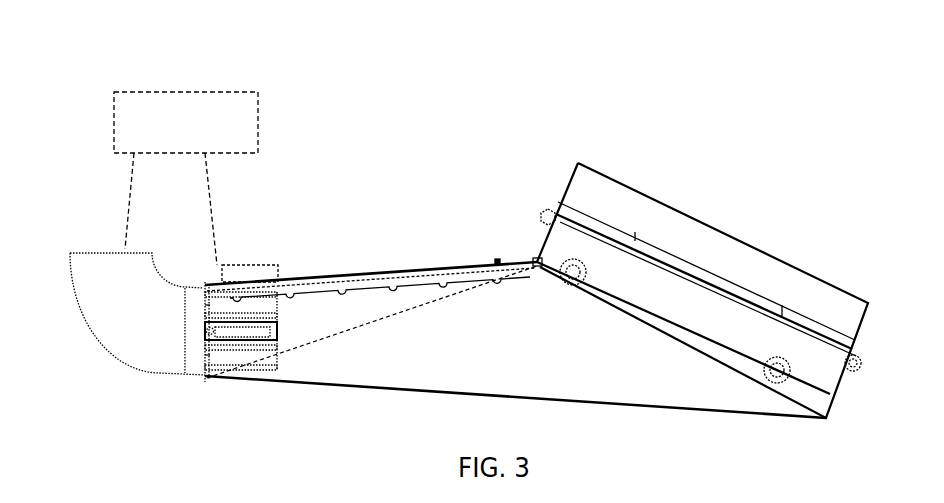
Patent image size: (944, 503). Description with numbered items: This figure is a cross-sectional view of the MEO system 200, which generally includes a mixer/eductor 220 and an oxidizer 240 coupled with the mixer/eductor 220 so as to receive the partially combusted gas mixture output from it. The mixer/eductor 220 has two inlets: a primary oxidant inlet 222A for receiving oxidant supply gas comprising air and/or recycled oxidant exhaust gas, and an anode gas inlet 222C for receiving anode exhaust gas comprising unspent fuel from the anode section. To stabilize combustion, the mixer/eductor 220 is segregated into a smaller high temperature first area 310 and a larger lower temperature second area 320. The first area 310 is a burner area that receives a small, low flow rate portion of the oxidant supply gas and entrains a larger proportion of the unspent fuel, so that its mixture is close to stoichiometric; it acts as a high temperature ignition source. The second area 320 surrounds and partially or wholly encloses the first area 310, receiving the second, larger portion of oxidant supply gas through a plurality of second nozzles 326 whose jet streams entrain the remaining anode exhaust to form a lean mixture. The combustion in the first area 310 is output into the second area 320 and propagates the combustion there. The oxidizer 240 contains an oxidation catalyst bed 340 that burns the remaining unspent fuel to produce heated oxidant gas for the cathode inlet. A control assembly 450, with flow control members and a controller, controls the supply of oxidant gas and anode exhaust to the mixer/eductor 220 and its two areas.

The control assembly 450 is at (232, 90).
The primary oxidant inlet 222A is at (118, 248).
The anode gas inlet 222C is at (265, 263).
The mixer/eductor 220 is at (432, 251).
The first area 310 is at (226, 317).
The second nozzles 326 is at (207, 305).
The second area 320 is at (334, 332).
The MEO system 200 is at (312, 459).
The oxidizer 240 is at (539, 186).
The oxidation catalyst bed 340 is at (705, 273).